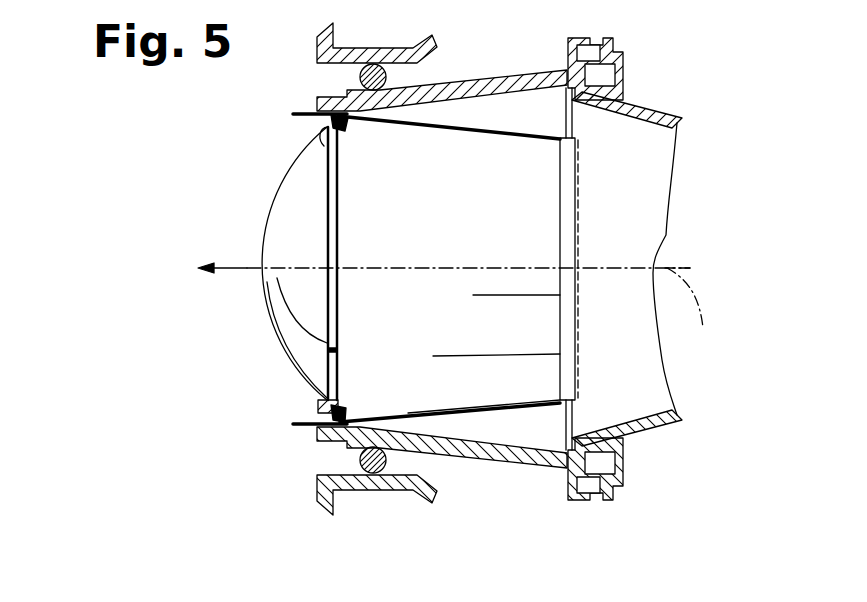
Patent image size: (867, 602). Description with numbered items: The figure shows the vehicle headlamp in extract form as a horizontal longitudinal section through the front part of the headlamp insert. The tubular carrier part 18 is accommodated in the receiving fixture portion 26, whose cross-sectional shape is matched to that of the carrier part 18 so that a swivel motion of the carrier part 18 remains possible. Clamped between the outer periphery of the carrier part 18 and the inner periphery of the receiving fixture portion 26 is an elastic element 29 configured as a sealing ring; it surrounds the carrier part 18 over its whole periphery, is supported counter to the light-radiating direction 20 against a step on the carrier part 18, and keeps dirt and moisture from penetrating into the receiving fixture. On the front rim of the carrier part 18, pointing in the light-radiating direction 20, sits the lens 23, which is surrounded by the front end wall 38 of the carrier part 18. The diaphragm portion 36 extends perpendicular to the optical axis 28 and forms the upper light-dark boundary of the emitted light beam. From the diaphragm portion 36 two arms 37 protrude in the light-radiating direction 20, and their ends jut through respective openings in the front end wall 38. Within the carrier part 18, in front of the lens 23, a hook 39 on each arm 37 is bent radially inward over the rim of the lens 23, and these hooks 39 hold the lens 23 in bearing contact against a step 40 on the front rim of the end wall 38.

The tubular carrier part 18 is at (490, 456).
The light-radiating direction 20 is at (227, 267).
The lens 23 is at (297, 340).
The receiving fixture portion 26 is at (377, 487).
The optical axis 28 is at (692, 312).
The elastic element (sealing ring) 29 is at (360, 461).
The diaphragm portion 36 is at (578, 222).
The arms 37 is at (475, 132).
The front end wall 38 is at (318, 403).
The hook 39 is at (343, 130).
The step 40 is at (323, 138).